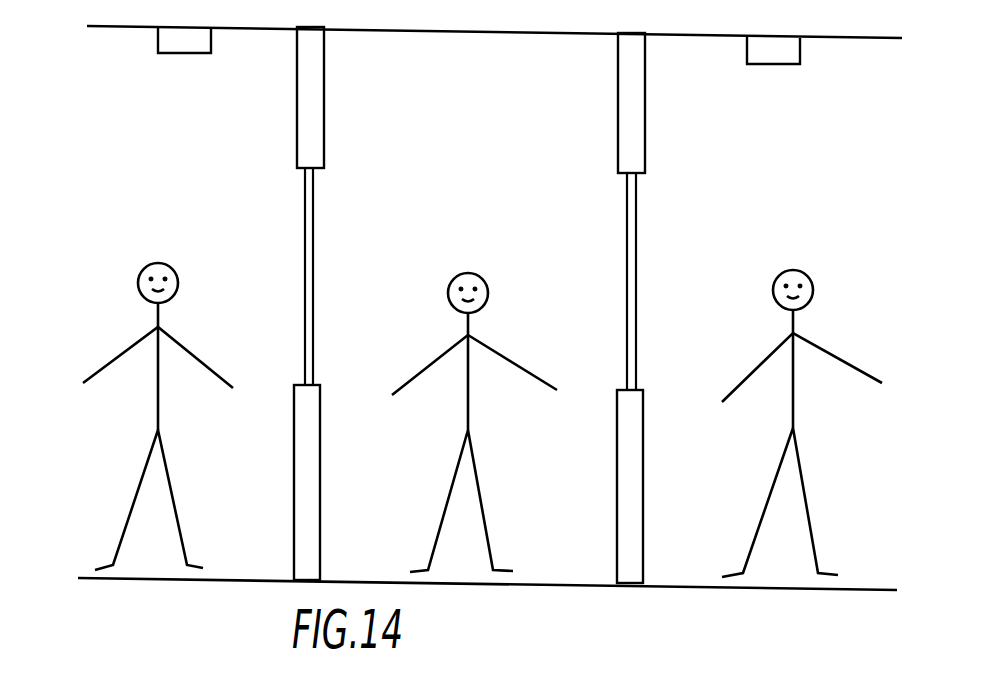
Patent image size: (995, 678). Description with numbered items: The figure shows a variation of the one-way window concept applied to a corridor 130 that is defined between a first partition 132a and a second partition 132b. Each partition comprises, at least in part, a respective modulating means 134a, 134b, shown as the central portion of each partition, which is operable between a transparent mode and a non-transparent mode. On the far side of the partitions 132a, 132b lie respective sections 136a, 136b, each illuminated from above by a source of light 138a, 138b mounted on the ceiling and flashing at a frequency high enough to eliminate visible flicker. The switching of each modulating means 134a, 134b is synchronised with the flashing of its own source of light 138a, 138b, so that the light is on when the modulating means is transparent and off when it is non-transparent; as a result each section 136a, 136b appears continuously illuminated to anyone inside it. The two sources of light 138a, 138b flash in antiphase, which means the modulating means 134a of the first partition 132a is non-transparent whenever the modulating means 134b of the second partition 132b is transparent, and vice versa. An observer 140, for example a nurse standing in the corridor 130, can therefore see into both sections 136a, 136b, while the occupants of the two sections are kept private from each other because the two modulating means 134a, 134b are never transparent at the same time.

The corridor 130 is at (492, 167).
The first partition 132a is at (313, 123).
The second partition 132b is at (618, 98).
The modulating means 134a is at (313, 235).
The modulating means 134b is at (628, 240).
The section 136a is at (202, 189).
The section 136b is at (800, 192).
The source of light 138a is at (182, 57).
The source of light 138b is at (772, 69).
The observer 140 is at (474, 407).